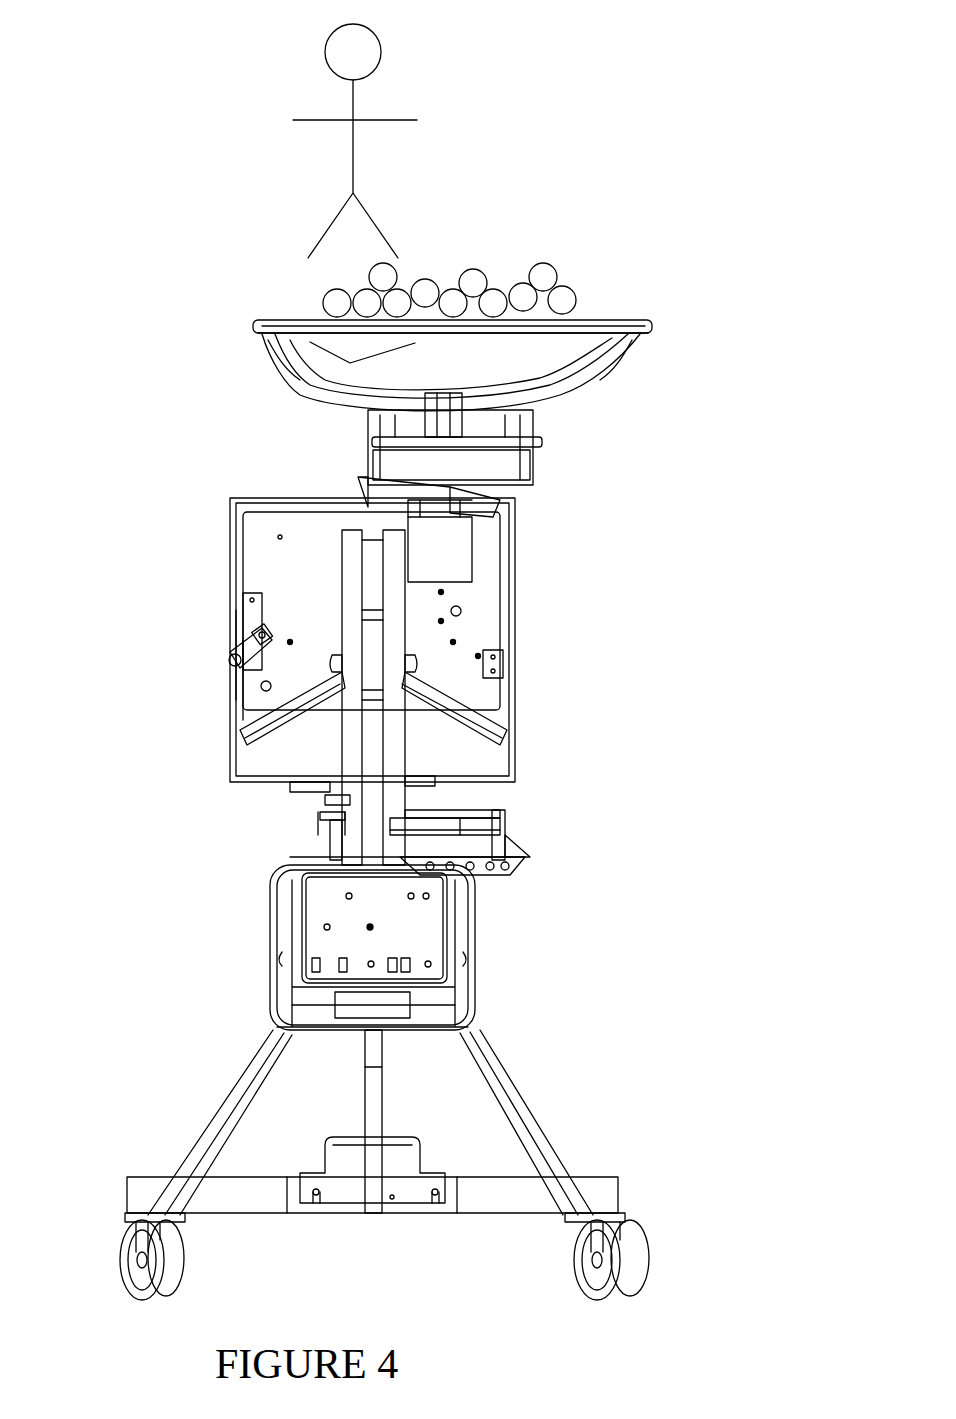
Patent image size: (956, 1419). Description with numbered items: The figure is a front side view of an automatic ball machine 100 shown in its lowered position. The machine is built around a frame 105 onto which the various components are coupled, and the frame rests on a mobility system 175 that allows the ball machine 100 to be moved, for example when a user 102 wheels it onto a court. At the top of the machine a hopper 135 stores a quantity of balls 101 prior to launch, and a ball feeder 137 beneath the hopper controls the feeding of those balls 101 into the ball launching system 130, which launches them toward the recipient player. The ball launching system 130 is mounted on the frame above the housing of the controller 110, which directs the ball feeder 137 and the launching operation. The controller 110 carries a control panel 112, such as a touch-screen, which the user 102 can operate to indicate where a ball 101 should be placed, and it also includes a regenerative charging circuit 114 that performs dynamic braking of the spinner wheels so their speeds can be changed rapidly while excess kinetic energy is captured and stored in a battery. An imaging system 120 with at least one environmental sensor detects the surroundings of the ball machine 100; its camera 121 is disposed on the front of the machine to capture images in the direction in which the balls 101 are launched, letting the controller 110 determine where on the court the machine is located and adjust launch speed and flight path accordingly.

The automatic ball machine 100 is at (142, 268).
The balls 101 is at (474, 272).
The user 102 is at (400, 38).
The frame 105 is at (543, 1143).
The controller 110 is at (375, 951).
The control panel 112 is at (430, 908).
The regenerative charging circuit 114 is at (300, 1008).
The imaging system 120 is at (545, 821).
The camera 121 is at (490, 810).
The ball launching system 130 is at (546, 665).
The hopper 135 is at (610, 292).
The ball feeder 137 is at (558, 456).
The mobility system 175 is at (195, 1278).